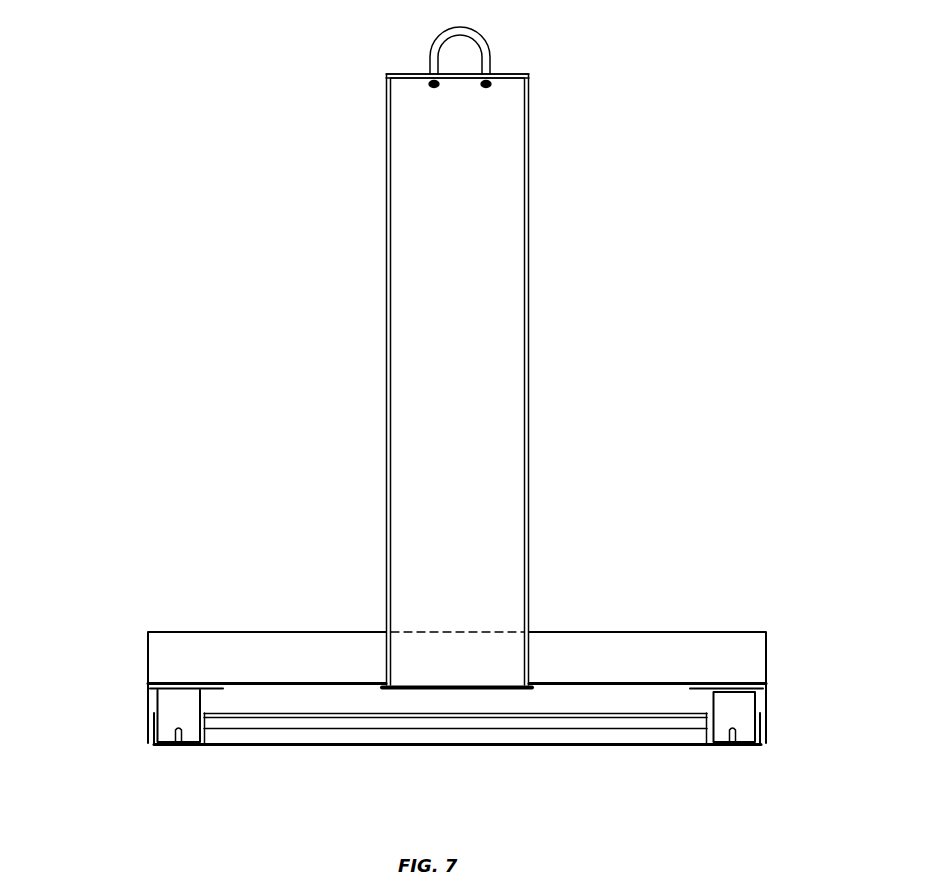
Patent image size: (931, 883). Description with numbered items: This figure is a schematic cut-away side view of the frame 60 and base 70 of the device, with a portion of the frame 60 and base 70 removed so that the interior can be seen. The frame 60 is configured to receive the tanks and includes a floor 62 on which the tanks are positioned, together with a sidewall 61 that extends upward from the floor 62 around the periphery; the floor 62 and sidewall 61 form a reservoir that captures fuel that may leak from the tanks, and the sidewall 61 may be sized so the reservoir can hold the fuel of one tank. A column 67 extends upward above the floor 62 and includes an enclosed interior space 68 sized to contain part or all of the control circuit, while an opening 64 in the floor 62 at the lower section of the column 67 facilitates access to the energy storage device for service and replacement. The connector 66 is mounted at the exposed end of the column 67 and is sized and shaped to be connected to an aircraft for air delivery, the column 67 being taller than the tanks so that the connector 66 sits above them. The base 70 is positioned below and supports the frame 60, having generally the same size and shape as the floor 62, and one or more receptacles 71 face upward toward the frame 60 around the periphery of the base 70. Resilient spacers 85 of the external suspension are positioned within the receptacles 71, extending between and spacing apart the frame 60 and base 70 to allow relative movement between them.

The frame 60 is at (220, 466).
The sidewall 61 is at (147, 650).
The floor 62 is at (285, 685).
The opening 64 is at (422, 683).
The connector 66 is at (479, 43).
The column 67 is at (528, 290).
The enclosed interior space 68 is at (503, 105).
The base 70 is at (237, 747).
The receptacles 71 is at (155, 725).
The resilient spacers 85 is at (177, 698).